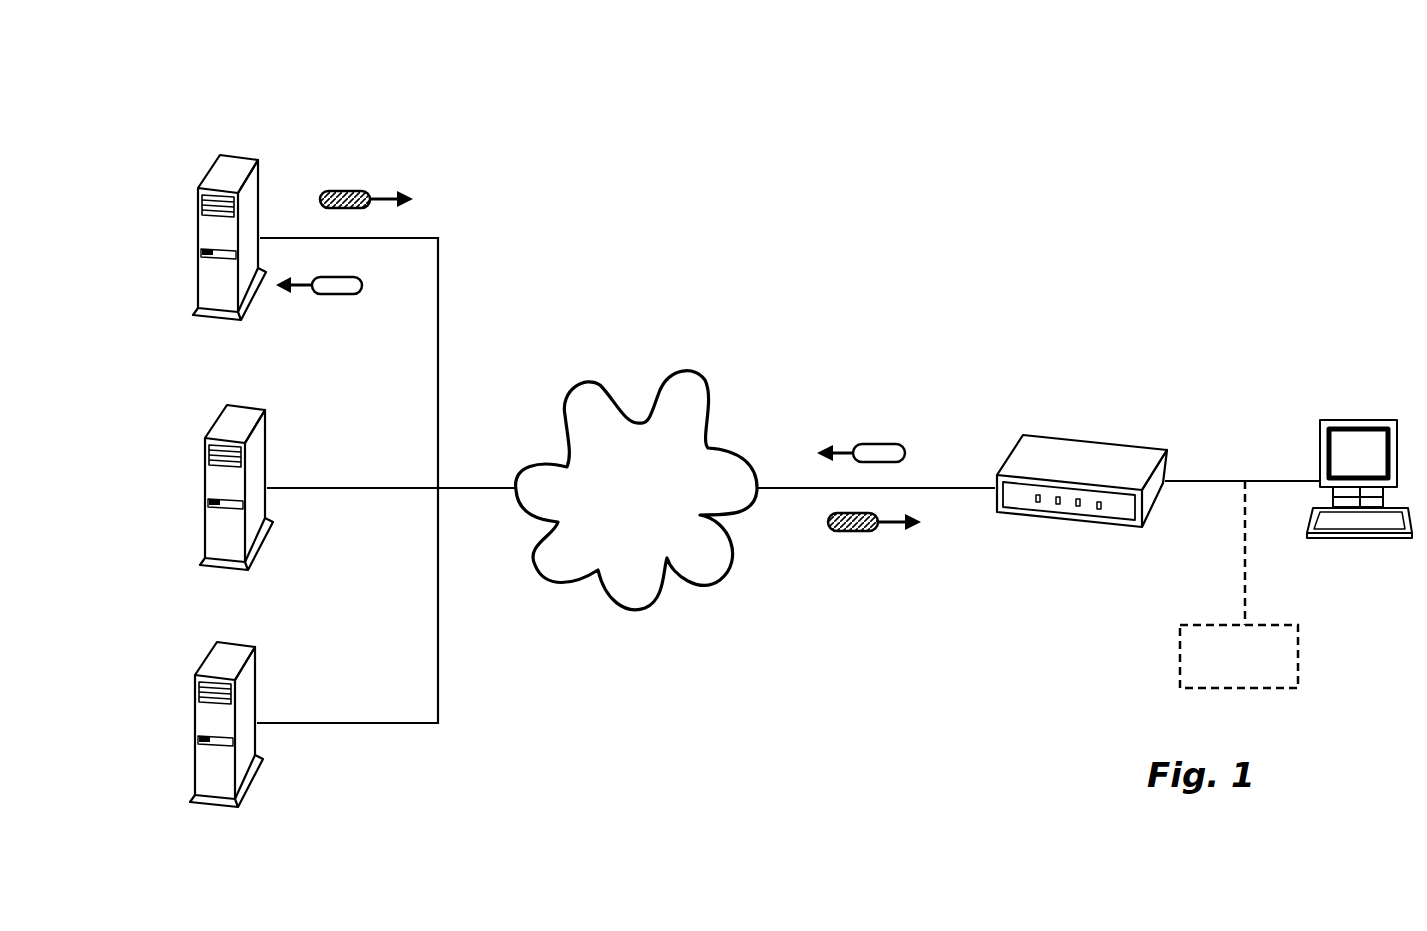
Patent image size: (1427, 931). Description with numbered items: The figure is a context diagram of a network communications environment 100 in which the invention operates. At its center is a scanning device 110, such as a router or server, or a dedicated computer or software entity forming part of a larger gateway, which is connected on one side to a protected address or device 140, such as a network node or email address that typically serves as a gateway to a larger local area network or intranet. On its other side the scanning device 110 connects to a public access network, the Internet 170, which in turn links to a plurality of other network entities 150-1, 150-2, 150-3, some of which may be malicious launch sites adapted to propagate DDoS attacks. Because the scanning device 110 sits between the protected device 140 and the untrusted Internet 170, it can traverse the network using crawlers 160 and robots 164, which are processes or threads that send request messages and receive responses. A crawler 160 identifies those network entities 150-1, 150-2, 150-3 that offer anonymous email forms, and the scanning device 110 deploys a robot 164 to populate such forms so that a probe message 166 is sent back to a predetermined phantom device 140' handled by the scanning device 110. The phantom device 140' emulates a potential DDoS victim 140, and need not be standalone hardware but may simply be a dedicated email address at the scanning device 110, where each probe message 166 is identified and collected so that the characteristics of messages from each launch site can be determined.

The network communications environment 100 is at (448, 100).
The scanning device 110 is at (1080, 527).
The protected address or device 140 is at (1342, 465).
The phantom device 140' is at (1197, 584).
The network entity 150-1 is at (228, 150).
The network entity 150-2 is at (208, 430).
The network entity 150-3 is at (198, 665).
The crawler 160 is at (912, 450).
The robot 164 is at (362, 285).
The probe message 166 is at (325, 190).
The Internet 170 is at (635, 418).